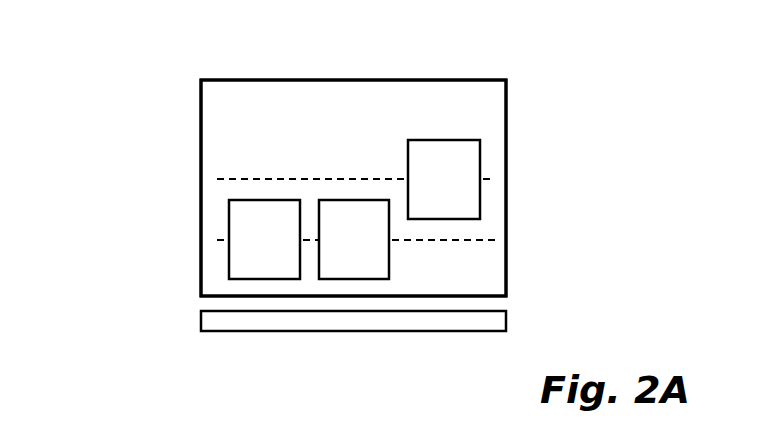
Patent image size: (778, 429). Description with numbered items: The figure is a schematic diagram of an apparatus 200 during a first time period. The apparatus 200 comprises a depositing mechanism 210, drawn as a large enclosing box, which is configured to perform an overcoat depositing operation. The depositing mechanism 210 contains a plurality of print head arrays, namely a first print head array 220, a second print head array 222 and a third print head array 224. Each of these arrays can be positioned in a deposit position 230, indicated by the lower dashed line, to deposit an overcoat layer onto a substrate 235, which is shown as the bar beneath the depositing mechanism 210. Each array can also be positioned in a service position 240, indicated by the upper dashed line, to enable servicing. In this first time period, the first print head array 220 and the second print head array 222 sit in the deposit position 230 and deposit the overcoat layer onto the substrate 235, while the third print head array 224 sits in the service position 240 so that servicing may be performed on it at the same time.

The apparatus 200 is at (118, 58).
The depositing mechanism 210 is at (201, 139).
The first print head array 220 is at (245, 253).
The second print head array 222 is at (335, 253).
The third print head array 224 is at (425, 193).
The deposit position 230 is at (495, 239).
The substrate 235 is at (503, 311).
The service position 240 is at (495, 179).